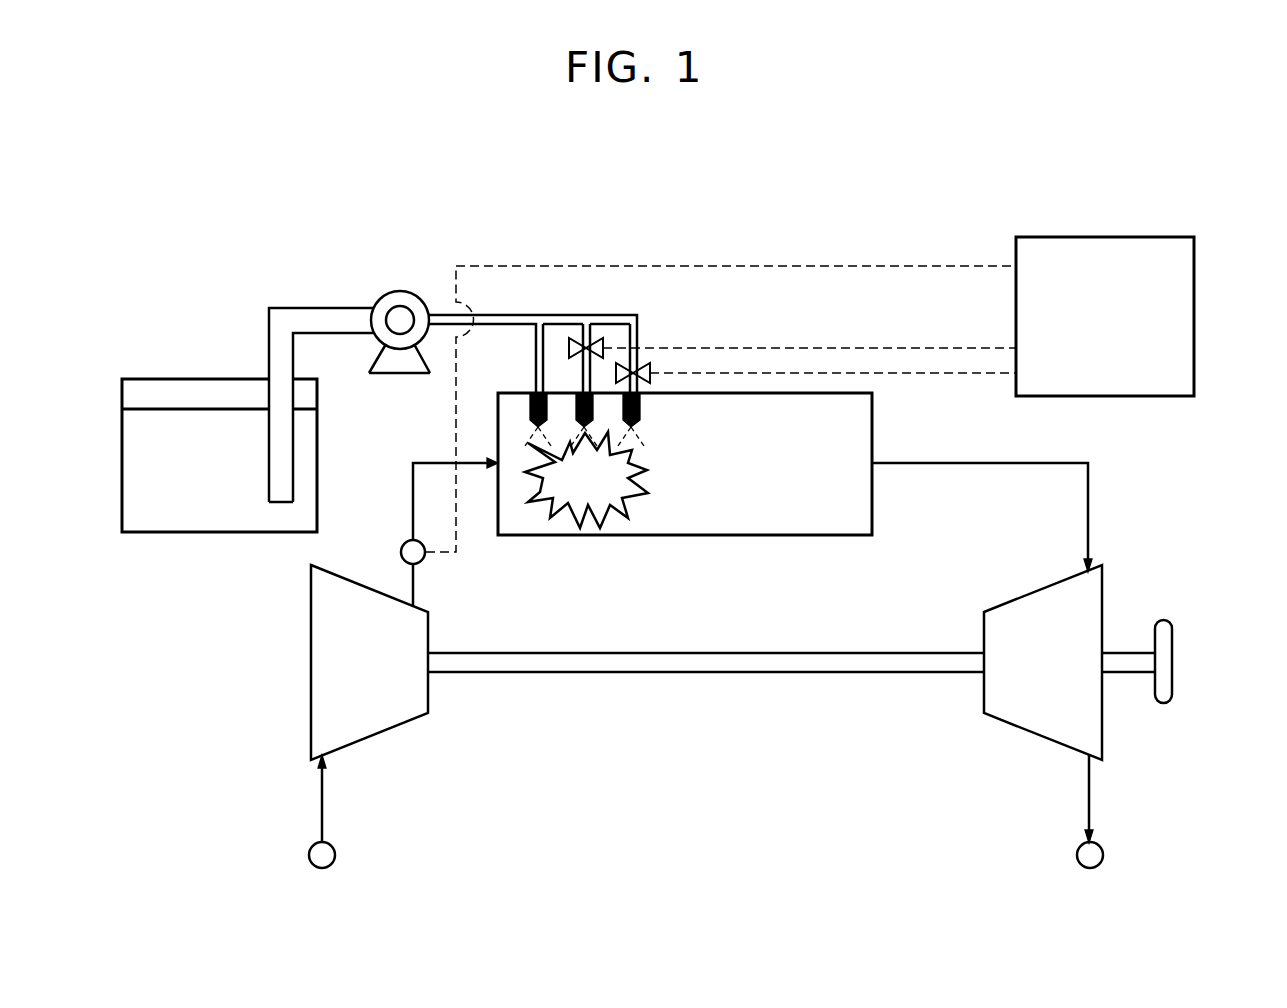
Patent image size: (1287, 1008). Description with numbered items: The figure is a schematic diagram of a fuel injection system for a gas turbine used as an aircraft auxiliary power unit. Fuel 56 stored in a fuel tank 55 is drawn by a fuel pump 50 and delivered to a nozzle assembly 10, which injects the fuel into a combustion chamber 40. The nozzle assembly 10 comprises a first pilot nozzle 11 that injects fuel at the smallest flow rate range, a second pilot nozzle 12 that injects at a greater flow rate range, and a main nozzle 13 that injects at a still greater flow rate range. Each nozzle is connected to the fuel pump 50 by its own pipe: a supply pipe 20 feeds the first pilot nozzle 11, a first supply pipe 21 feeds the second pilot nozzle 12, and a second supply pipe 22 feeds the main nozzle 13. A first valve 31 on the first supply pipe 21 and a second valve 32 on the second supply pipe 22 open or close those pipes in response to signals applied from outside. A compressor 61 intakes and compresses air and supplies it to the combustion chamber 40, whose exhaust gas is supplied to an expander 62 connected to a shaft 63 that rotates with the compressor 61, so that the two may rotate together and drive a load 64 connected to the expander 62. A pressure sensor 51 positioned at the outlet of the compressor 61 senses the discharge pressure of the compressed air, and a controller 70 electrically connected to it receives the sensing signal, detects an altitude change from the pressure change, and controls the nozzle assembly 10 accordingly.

The nozzle assembly 10 is at (578, 514).
The first pilot nozzle 11 is at (528, 417).
The second pilot nozzle 12 is at (575, 417).
The main nozzle 13 is at (622, 417).
The supply pipe 20 is at (536, 362).
The first supply pipe 21 is at (583, 336).
The second supply pipe 22 is at (636, 356).
The first valve 31 is at (568, 348).
The second valve 32 is at (649, 365).
The combustion chamber 40 is at (835, 537).
The fuel pump 50 is at (389, 293).
The pressure sensor 51 is at (404, 544).
The fuel tank 55 is at (122, 513).
The fuel 56 is at (193, 515).
The compressor 61 is at (388, 730).
The expander 62 is at (1030, 732).
The shaft 63 is at (748, 674).
The load 64 is at (1163, 641).
The controller 70 is at (1112, 237).